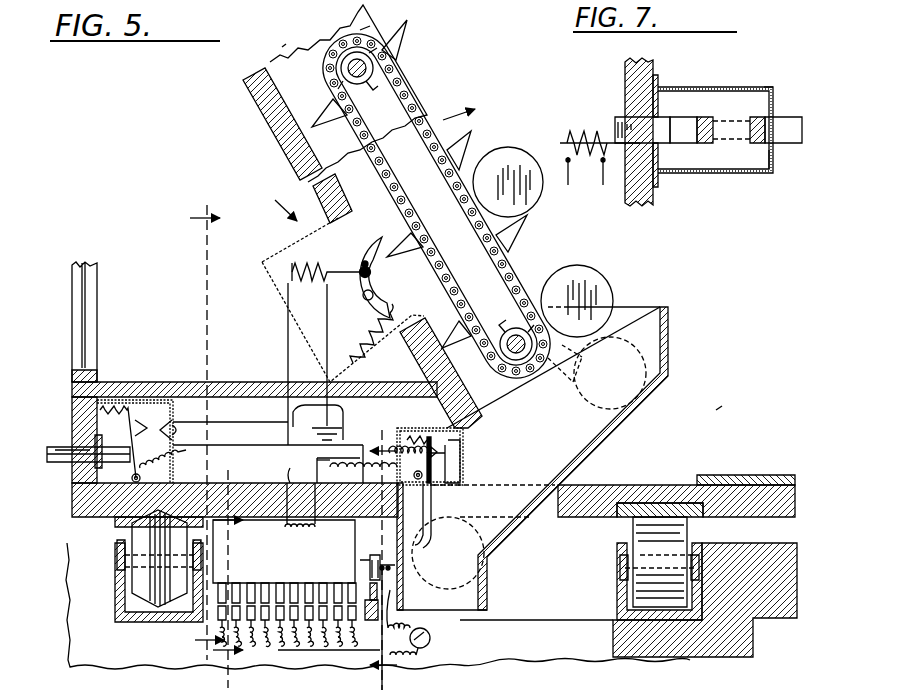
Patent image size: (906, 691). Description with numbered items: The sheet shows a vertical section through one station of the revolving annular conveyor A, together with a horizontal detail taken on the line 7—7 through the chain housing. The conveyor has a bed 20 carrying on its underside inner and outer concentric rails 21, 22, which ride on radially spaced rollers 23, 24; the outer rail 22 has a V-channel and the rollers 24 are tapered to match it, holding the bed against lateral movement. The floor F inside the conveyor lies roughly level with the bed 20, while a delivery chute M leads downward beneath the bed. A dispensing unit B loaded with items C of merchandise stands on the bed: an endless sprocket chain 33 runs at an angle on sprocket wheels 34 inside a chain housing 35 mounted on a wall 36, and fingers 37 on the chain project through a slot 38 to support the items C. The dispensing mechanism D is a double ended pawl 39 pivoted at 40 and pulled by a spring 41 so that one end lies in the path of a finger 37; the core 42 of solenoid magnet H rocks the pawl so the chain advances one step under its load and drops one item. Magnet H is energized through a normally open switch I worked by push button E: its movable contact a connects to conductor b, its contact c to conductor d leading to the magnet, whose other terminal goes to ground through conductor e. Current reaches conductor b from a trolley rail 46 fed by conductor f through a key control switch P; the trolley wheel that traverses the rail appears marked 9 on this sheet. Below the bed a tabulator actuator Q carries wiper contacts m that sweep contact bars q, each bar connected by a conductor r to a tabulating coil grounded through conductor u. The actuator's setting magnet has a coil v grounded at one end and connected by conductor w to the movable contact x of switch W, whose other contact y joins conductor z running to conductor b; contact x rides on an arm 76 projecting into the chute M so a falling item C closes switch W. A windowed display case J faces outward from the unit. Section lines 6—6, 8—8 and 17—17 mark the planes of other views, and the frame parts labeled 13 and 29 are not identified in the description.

In FIG. 5, the section line 6- 6 is at (205, 420).
In FIG. 5, the section line 7— 7 is at (371, 167).
In FIG. 5, the section line 8- 8 is at (228, 580).
In FIG. 5, the section line 17- 17 is at (383, 559).
In FIG. 5, the machine frame 13 is at (125, 672).
In FIG. 5, the conveyor bed 20 is at (675, 485).
In FIG. 5, the inner rail 21 is at (640, 500).
In FIG. 5, the outer rail 22 is at (118, 510).
In FIG. 5, the roller 23 is at (640, 533).
In FIG. 5, the tapered roller 24 is at (135, 586).
In FIG. 5, the guide plate 29 is at (748, 475).
In FIG. 5, the endless sprocket chain 33 is at (402, 88).
In FIG. 7, the endless sprocket chain 33 is at (750, 118).
In FIG. 5, the sprocket wheel 34 is at (348, 68).
In FIG. 5, the chain housing 35 is at (275, 62).
In FIG. 7, the chain housing 35 is at (716, 87).
In FIG. 5, the wall 36 is at (245, 97).
In FIG. 7, the wall 36 is at (625, 70).
In FIG. 5, the finger 37 is at (410, 50).
In FIG. 7, the finger 37 is at (685, 117).
In FIG. 5, the slot 38 is at (366, 27).
In FIG. 7, the slot 38 is at (773, 150).
In FIG. 5, the double ended pawl 39 is at (365, 258).
In FIG. 7, the double ended pawl 39 is at (618, 124).
In FIG. 5, the pivot 40 is at (374, 294).
In FIG. 5, the spring 41 is at (372, 340).
In FIG. 5, the solenoid core 42 is at (338, 272).
In FIG. 5, the trolley rail 46 is at (382, 571).
In FIG. 5, the movable arm 76 is at (433, 508).
In FIG. 5, the detent 9 is at (385, 565).
In FIG. 5, the annular conveyor A is at (720, 408).
In FIG. 5, the article dispensing unit B is at (285, 45).
In FIG. 7, the article dispensing unit B is at (768, 83).
In FIG. 5, the item of merchandise C is at (512, 150).
In FIG. 5, the dispensing mechanism D is at (505, 380).
In FIG. 5, the push button E is at (57, 445).
In FIG. 5, the floor F is at (770, 543).
In FIG. 5, the solenoid magnet H is at (290, 272).
In FIG. 7, the solenoid magnet H is at (588, 128).
In FIG. 5, the switch I is at (143, 408).
In FIG. 5, the windowed display case J is at (107, 328).
In FIG. 5, the delivery chute M is at (661, 305).
In FIG. 5, the key control switch P is at (434, 637).
In FIG. 5, the tabulator actuator Q is at (256, 520).
In FIG. 5, the electric switch W is at (464, 470).
In FIG. 5, the movable contact member a is at (135, 426).
In FIG. 5, the conductor b is at (243, 448).
In FIG. 5, the contact member c is at (174, 426).
In FIG. 5, the conductor d is at (286, 357).
In FIG. 7, the conductor d is at (573, 180).
In FIG. 5, the conductor e is at (327, 302).
In FIG. 7, the conductor e is at (602, 180).
In FIG. 5, the conductor f is at (401, 604).
In FIG. 5, the wiper contact m is at (286, 593).
In FIG. 5, the contact bar q is at (294, 633).
In FIG. 5, the conductor r is at (220, 650).
In FIG. 5, the conductor u is at (296, 477).
In FIG. 5, the coil v is at (318, 528).
In FIG. 5, the conductor w is at (317, 465).
In FIG. 5, the movable contact element x is at (427, 432).
In FIG. 5, the contact member y is at (450, 445).
In FIG. 5, the conductor z is at (365, 462).